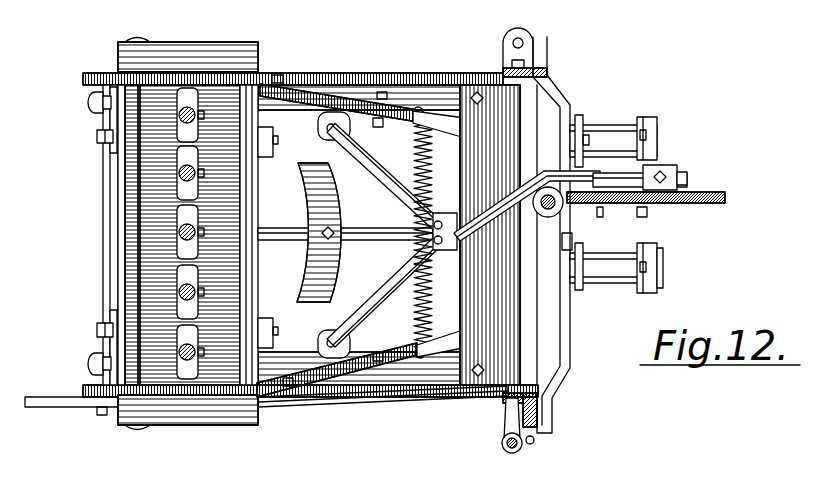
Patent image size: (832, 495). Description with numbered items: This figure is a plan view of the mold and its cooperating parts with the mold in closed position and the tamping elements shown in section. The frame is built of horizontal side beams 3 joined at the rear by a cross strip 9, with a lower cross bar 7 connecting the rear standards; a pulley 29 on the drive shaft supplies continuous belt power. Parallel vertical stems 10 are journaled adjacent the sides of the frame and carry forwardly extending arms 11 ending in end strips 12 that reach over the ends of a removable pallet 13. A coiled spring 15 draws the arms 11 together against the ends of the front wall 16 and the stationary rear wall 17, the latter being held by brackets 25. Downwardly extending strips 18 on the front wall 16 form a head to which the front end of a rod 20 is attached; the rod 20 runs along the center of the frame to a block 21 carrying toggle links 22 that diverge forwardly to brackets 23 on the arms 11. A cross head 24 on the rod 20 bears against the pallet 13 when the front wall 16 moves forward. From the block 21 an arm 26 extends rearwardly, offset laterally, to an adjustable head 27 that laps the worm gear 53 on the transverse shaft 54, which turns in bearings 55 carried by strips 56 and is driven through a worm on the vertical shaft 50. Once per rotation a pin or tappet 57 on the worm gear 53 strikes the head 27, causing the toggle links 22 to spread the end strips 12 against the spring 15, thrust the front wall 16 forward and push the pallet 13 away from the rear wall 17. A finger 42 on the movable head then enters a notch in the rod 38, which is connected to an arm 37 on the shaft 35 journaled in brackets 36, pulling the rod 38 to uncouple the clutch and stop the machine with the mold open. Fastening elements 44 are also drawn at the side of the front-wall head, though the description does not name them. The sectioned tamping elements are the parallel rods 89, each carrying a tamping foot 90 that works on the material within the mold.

The horizontal side beams 3 is at (378, 88).
The cross bar 7 is at (571, 340).
The cross strip 9 is at (480, 292).
The vertical stems 10 is at (482, 130).
The arms 11 is at (400, 118).
The end strips 12 is at (190, 80).
The removable pallet 13 is at (172, 420).
The coiled spring 15 is at (430, 305).
The front wall 16 is at (122, 177).
The rear wall 17 is at (250, 205).
The downwardly extending strips 18 is at (117, 128).
The rod 20 is at (367, 230).
The block 21 is at (447, 213).
The toggle links 22 is at (385, 172).
The brackets 23 is at (328, 115).
The cross head 24 is at (312, 165).
The brackets 25 is at (263, 127).
The arm 26 is at (517, 187).
The adjustable head 27 is at (662, 170).
The pulley 29 is at (110, 265).
The shaft 35 is at (522, 450).
The brackets 36 is at (535, 440).
The arm 37 is at (548, 405).
The rod 38 is at (382, 405).
The finger 42 is at (103, 415).
The bolt 44 is at (113, 98).
The vertical shaft 50 is at (563, 205).
The worm gear 53 is at (720, 206).
The transverse shaft 54 is at (655, 292).
The bearings 55 is at (657, 130).
The strips 56 is at (595, 130).
The pin or tappet 57 is at (597, 176).
The parallel rods 89 is at (190, 287).
The tamping foot 90 is at (200, 318).